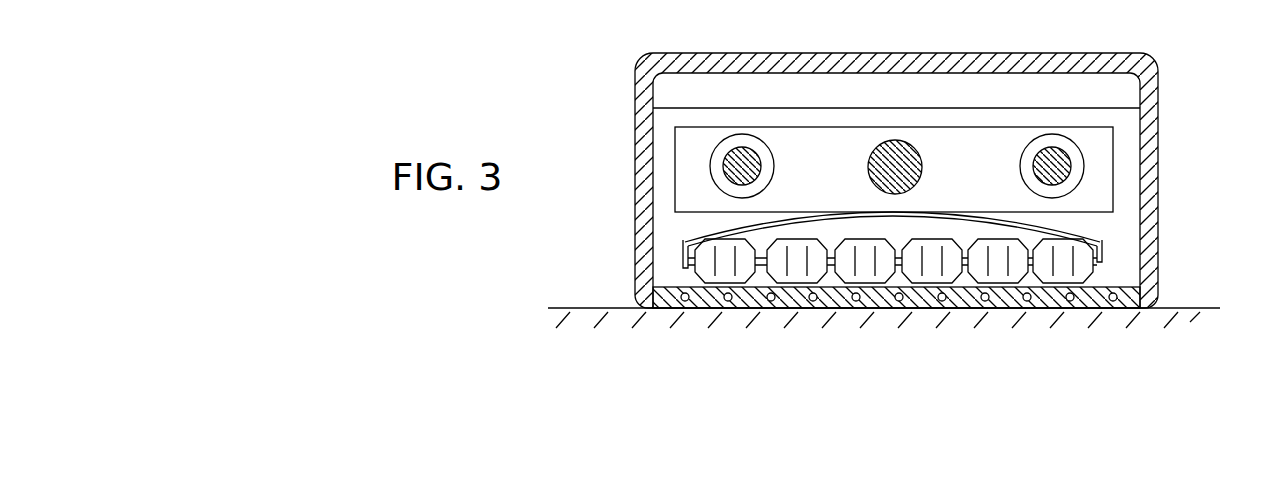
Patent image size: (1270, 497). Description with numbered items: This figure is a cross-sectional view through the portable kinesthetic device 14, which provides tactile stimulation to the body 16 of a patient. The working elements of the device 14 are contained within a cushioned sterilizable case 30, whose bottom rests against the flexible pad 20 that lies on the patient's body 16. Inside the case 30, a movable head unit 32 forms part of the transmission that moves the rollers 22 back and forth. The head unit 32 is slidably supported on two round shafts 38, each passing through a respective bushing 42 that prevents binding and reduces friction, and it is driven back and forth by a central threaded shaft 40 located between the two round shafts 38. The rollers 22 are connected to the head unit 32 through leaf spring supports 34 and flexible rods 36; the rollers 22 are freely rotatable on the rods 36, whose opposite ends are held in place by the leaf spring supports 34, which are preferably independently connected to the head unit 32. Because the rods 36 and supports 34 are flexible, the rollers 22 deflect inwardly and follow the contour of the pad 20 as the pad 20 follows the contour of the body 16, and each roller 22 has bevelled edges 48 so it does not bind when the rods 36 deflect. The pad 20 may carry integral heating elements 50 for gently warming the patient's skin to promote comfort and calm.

The portable kinesthetic device 14 is at (1170, 147).
The body of a patient 16 is at (598, 304).
The flexible pad 20 is at (1130, 292).
The rollers 22 is at (776, 265).
The cushioned sterilizable case 30 is at (1160, 108).
The head unit 32 is at (975, 128).
The leaf spring supports 34 is at (683, 240).
The flexible rods 36 is at (831, 268).
The round shafts 38 is at (767, 160).
The central threaded shaft 40 is at (895, 140).
The bushings 42 is at (710, 163).
The bevelled edges 48 is at (748, 242).
The heating elements 50 is at (808, 300).